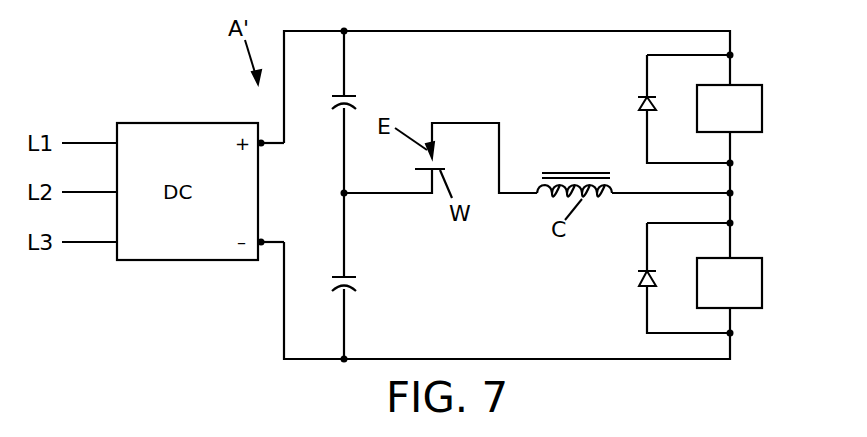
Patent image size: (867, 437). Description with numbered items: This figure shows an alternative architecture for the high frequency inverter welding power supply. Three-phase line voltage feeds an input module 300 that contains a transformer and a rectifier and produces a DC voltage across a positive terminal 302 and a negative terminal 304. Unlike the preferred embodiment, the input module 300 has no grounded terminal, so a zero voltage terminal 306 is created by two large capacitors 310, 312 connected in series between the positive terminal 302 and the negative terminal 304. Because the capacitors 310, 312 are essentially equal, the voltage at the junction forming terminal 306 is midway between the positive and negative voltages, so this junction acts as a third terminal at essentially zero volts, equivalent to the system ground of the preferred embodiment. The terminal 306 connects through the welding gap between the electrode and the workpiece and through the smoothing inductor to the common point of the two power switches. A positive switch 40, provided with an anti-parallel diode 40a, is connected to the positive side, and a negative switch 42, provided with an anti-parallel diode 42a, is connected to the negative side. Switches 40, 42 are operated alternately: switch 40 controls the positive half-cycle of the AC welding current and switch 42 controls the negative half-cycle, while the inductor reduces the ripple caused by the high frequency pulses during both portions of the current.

The input module 300 is at (173, 121).
The positive terminal 302 is at (262, 145).
The negative terminal 304 is at (262, 240).
The zero voltage terminal 306 is at (347, 196).
The capacitor 310 is at (349, 93).
The capacitor 312 is at (357, 280).
The positive switch 40 is at (763, 108).
The anti-parallel diode 40a is at (637, 103).
The negative switch 42 is at (763, 288).
The anti-parallel diode 42a is at (638, 281).